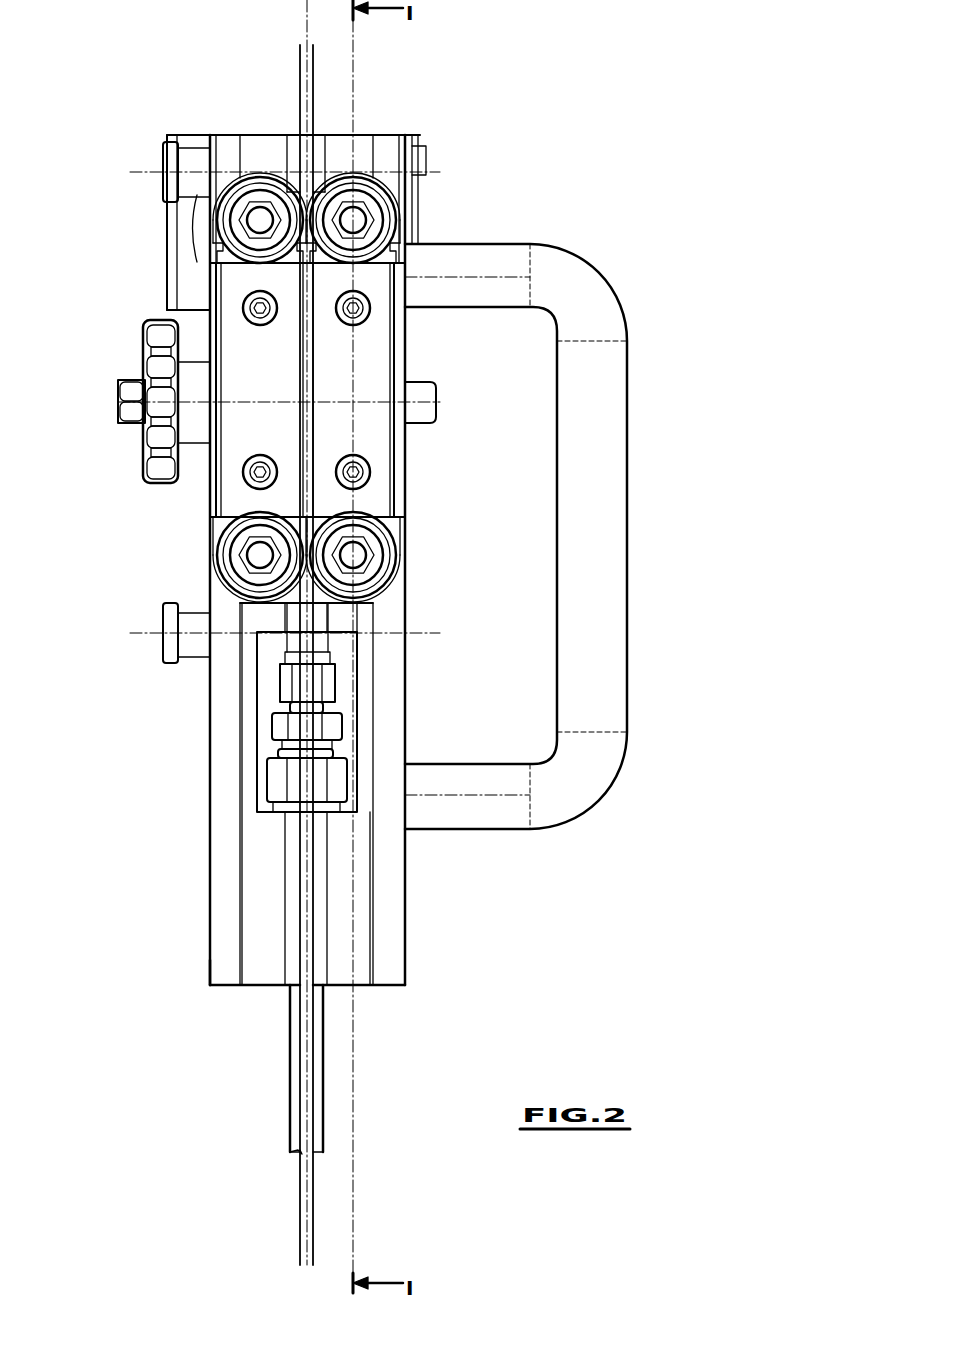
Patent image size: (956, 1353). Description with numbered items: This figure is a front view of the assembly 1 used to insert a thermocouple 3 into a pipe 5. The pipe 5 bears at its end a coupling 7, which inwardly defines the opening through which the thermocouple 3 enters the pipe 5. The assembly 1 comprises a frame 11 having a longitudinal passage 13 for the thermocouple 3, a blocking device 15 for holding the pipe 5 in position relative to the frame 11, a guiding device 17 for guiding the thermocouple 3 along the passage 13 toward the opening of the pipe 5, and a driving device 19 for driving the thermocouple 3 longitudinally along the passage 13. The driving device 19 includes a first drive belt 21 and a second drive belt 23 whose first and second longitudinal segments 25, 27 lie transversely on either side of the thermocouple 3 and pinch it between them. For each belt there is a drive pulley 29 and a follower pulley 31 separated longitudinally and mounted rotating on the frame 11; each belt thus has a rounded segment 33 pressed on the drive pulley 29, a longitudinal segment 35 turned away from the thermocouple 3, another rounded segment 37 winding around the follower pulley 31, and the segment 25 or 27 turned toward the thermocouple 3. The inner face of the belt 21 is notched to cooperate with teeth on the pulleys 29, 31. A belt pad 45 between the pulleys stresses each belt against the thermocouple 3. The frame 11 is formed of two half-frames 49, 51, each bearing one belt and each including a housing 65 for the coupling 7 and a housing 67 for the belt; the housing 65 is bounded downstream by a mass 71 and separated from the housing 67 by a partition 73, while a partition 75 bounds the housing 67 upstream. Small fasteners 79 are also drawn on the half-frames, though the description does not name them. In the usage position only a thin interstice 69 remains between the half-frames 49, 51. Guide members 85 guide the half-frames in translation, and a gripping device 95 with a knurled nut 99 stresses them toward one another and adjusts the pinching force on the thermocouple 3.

The assembly 1 is at (557, 77).
The thermocouple 3 is at (314, 56).
The pipe 5 is at (297, 1103).
The coupling 7 is at (277, 781).
The frame 11 is at (195, 1010).
The longitudinal passage 13 is at (247, 653).
The blocking device 15 is at (280, 912).
The guiding device 17 is at (283, 104).
The driving device 19 is at (405, 210).
The first drive belt 21 is at (412, 532).
The second drive belt 23 is at (200, 547).
The first longitudinal segment 25 is at (358, 196).
The second longitudinal segment 27 is at (282, 250).
The drive pulley 29 is at (235, 245).
The follower pulley 31 is at (228, 562).
The rounded segment 33 is at (242, 182).
The longitudinal segment 35 is at (225, 256).
The rounded segment 37 is at (270, 600).
The belt pad 45 is at (230, 305).
The half-frame 49 is at (398, 932).
The half-frame 51 is at (218, 950).
The housing 65 is at (337, 707).
The housing 67 is at (405, 505).
The interstice 69 is at (305, 850).
The mass 71 is at (265, 978).
The partition 73 is at (338, 622).
The partition 75 is at (268, 142).
The fastening screws 79 is at (264, 455).
The guide members 85 is at (150, 154).
The gripping device 95 is at (460, 384).
The knurled nut 99 is at (158, 340).